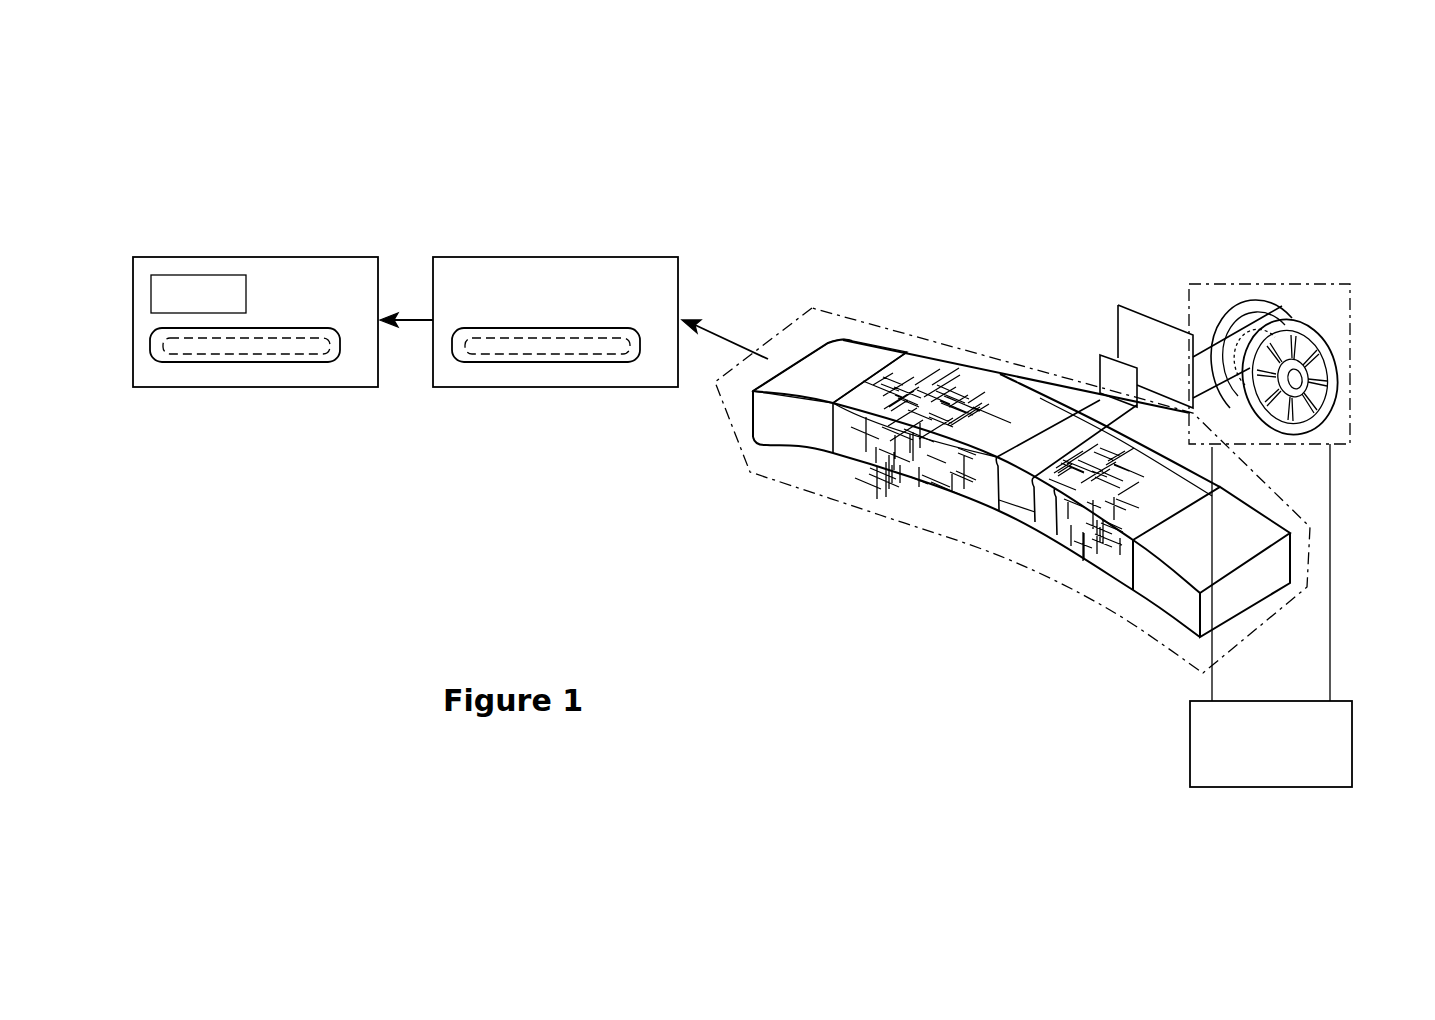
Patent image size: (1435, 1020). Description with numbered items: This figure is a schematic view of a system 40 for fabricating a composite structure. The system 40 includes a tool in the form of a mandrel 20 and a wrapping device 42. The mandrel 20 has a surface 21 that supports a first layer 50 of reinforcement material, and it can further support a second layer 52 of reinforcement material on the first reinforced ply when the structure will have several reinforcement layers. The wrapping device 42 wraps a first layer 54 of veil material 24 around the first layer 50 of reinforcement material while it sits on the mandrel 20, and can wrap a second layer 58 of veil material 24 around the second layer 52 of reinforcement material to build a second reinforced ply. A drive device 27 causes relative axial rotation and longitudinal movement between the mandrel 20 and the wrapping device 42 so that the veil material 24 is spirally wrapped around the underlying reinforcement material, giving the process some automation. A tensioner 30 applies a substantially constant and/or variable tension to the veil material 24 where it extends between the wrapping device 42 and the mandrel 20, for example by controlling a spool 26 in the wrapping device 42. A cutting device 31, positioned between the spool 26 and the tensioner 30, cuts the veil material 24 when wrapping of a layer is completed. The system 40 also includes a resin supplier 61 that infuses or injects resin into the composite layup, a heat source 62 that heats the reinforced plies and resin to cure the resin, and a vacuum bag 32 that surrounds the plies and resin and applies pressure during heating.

The mandrel 20 is at (958, 343).
The surface 21 is at (843, 360).
The veil material 24 is at (1283, 306).
The spool 26 is at (1313, 413).
The drive device 27 is at (1352, 701).
The tensioner 30 is at (1152, 347).
The cutting device 31 is at (1107, 370).
The vacuum bag 32 is at (297, 363).
The system 40 is at (1083, 209).
The wrapping device 42 is at (1296, 329).
The first layer of reinforcement material 50 is at (565, 461).
The second layer of reinforcement material 52 is at (190, 366).
The first layer of veil material 54 is at (967, 519).
The second layer of veil material 58 is at (1045, 402).
The resin supplier 61 is at (600, 257).
The heat source 62 is at (300, 257).